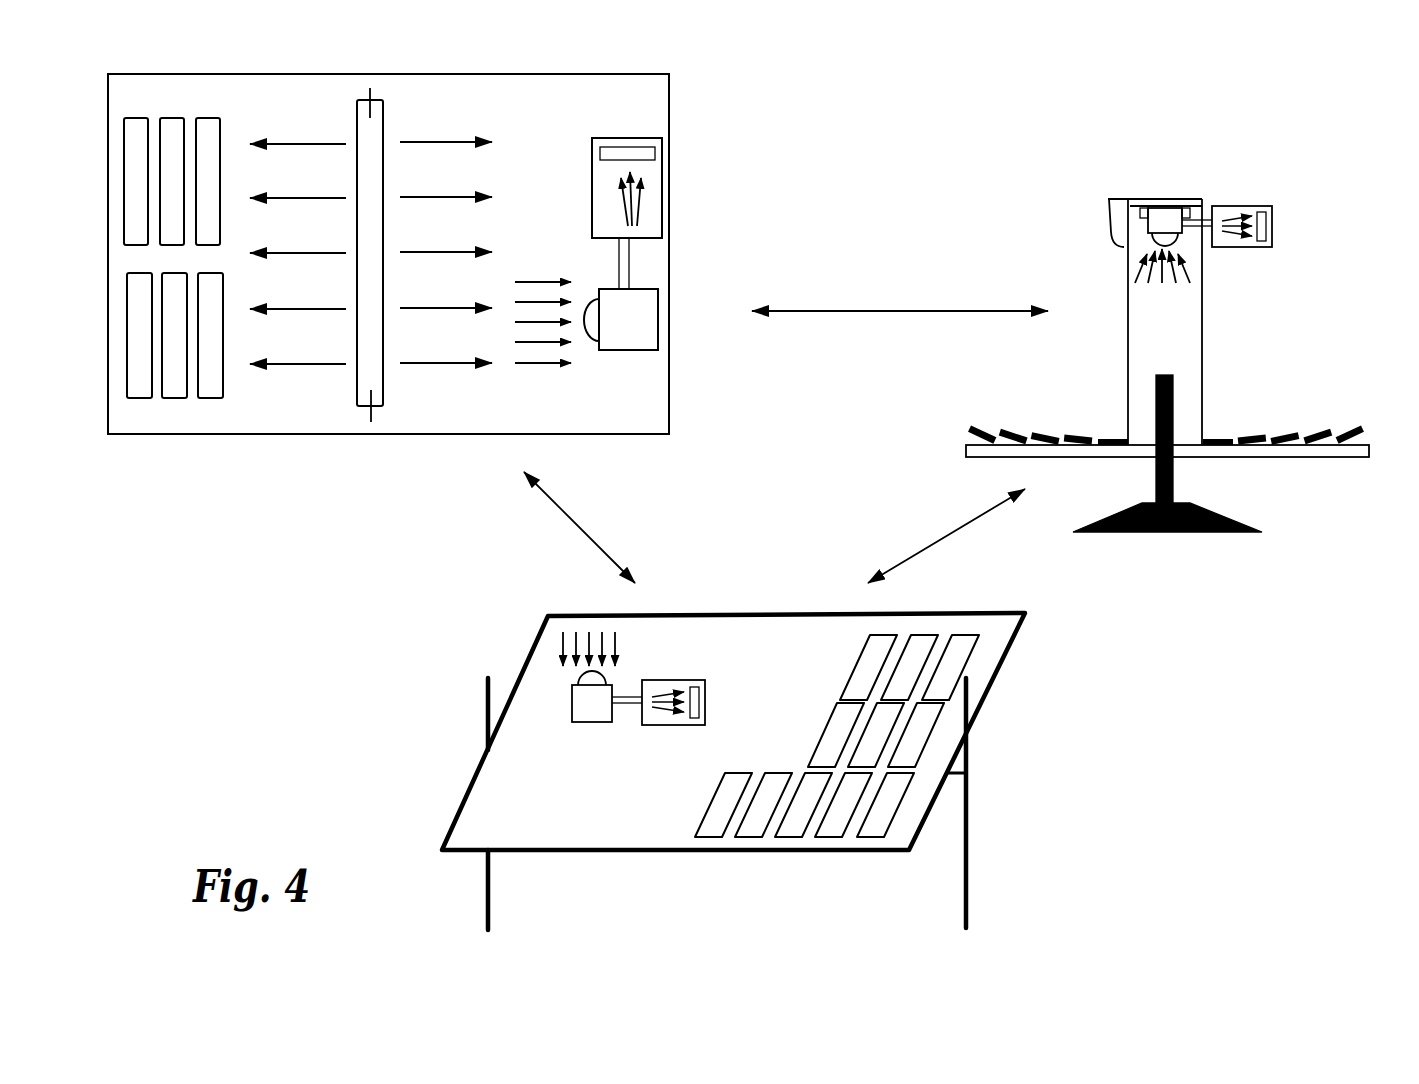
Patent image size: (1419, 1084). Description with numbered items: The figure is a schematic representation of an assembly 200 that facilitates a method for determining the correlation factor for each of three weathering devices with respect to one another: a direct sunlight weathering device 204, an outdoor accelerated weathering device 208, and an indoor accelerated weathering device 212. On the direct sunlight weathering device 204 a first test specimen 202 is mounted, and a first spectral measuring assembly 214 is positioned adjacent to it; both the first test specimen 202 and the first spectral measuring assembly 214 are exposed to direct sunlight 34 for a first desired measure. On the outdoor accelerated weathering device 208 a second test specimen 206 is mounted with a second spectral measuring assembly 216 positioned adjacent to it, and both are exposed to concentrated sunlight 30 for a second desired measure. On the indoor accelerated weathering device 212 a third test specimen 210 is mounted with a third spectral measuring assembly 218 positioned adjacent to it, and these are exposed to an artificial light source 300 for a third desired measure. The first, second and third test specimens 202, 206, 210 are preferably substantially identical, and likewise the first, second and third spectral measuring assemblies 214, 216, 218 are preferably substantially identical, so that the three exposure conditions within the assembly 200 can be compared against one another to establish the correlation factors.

The assembly 200 is at (989, 115).
The first test specimen 202 is at (968, 657).
The direct sunlight weathering device 204 is at (1007, 812).
The second test specimen 206 is at (1148, 214).
The outdoor accelerated weathering device 208 is at (1326, 475).
The third test specimen 210 is at (172, 118).
The indoor accelerated weathering device 212 is at (175, 507).
The first spectral measuring assembly 214 is at (600, 748).
The second spectral measuring assembly 216 is at (1192, 364).
The third spectral measuring assembly 218 is at (642, 267).
The concentrated sunlight 30 is at (1192, 273).
The direct sunlight 34 is at (618, 643).
The artificial light source 300 is at (385, 118).